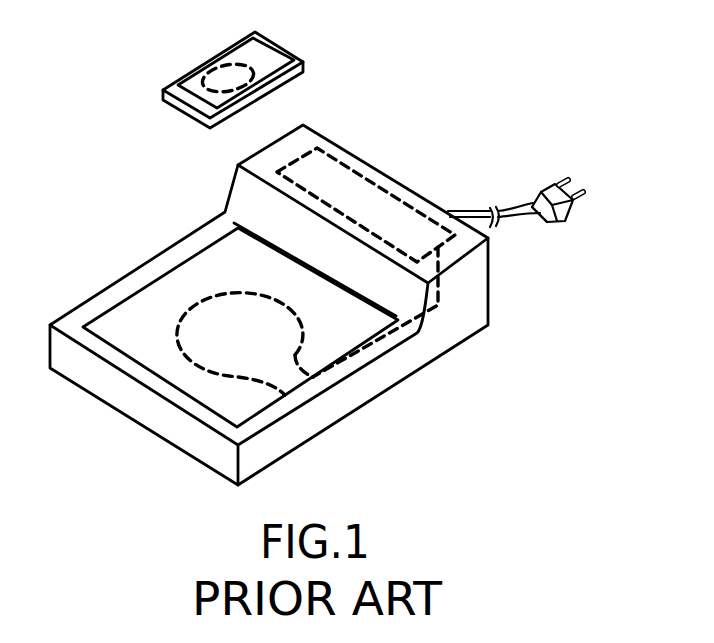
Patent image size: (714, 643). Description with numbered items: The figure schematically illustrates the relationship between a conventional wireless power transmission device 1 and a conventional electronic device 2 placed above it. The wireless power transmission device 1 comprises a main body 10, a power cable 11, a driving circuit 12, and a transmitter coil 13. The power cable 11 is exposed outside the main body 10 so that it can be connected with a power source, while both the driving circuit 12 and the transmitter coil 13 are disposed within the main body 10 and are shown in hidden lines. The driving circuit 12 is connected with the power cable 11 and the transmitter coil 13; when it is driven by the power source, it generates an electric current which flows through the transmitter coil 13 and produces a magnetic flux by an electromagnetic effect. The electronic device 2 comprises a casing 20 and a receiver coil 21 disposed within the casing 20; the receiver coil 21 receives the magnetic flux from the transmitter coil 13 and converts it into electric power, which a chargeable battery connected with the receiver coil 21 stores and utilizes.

The wireless power transmission device 1 is at (315, 305).
The electronic device 2 is at (215, 68).
The main body 10 is at (115, 292).
The power cable 11 is at (527, 221).
The driving circuit 12 is at (372, 185).
The transmitter coil 13 is at (185, 355).
The casing 20 is at (173, 90).
The receiver coil 21 is at (248, 72).